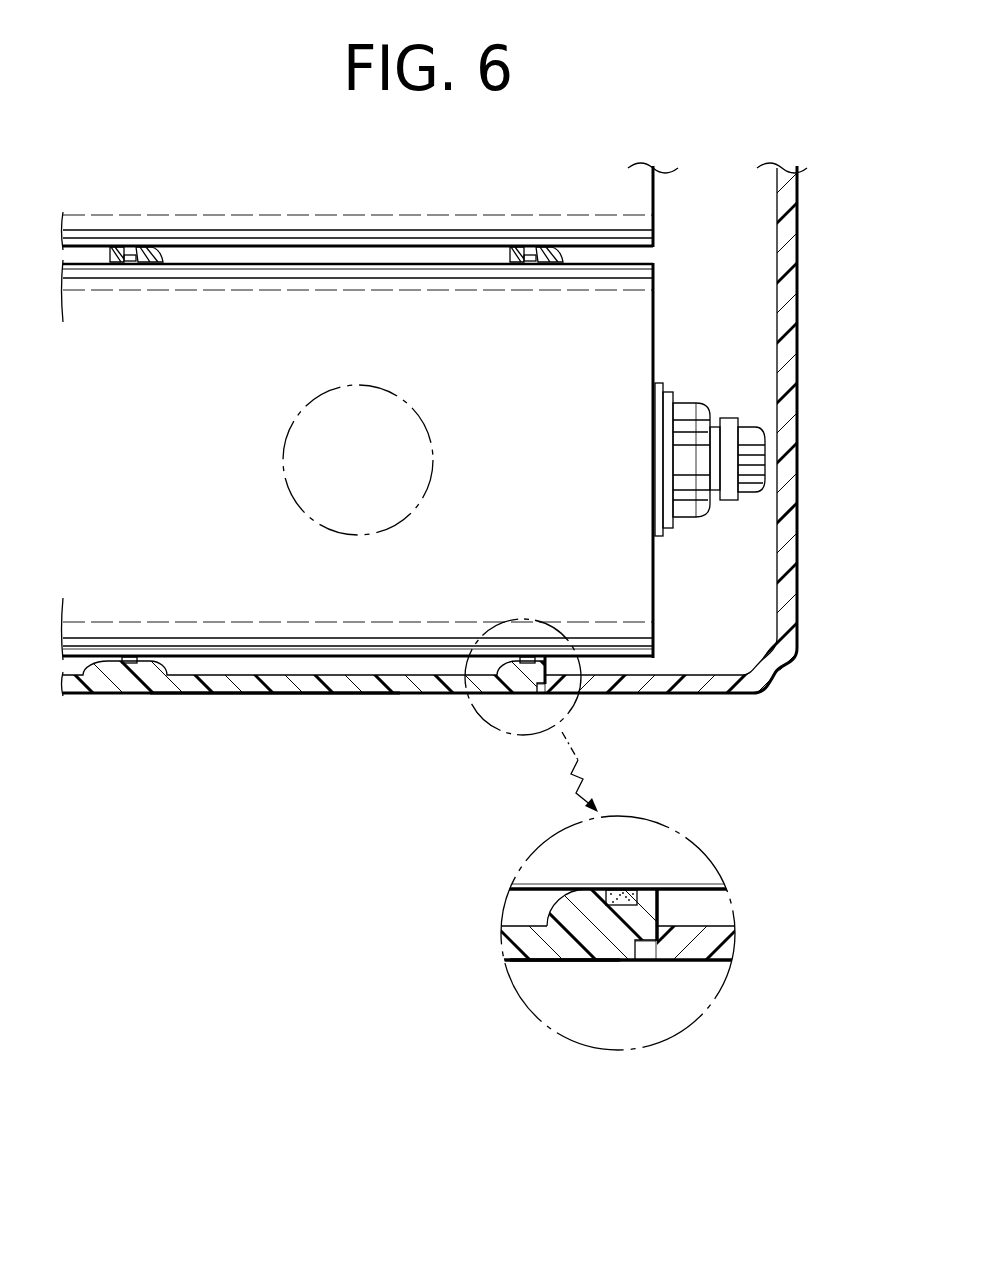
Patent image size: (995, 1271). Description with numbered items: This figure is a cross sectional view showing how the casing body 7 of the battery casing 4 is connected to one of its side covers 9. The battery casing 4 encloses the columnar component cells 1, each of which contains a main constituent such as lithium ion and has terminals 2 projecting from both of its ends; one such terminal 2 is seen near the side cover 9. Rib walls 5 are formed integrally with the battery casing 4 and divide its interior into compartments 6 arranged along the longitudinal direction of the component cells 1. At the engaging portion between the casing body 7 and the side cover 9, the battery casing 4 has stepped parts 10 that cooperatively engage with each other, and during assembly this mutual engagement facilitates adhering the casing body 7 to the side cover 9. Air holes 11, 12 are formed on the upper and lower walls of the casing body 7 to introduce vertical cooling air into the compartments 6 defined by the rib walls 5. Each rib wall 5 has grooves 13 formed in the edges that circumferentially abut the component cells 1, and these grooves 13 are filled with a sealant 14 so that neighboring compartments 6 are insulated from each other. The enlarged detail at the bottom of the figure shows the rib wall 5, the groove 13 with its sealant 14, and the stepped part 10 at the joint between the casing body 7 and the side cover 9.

The component cell 1 is at (637, 201).
The terminal 2 is at (748, 427).
The battery casing 4 is at (393, 699).
The rib wall 5 is at (148, 253).
The compartment 6 is at (740, 601).
The casing body 7 is at (159, 703).
The side cover 9 is at (799, 260).
The stepped part 10 is at (549, 692).
The air hole 11 is at (405, 454).
The air hole 12 is at (385, 398).
The groove 13 is at (129, 255).
The sealant 14 is at (618, 889).